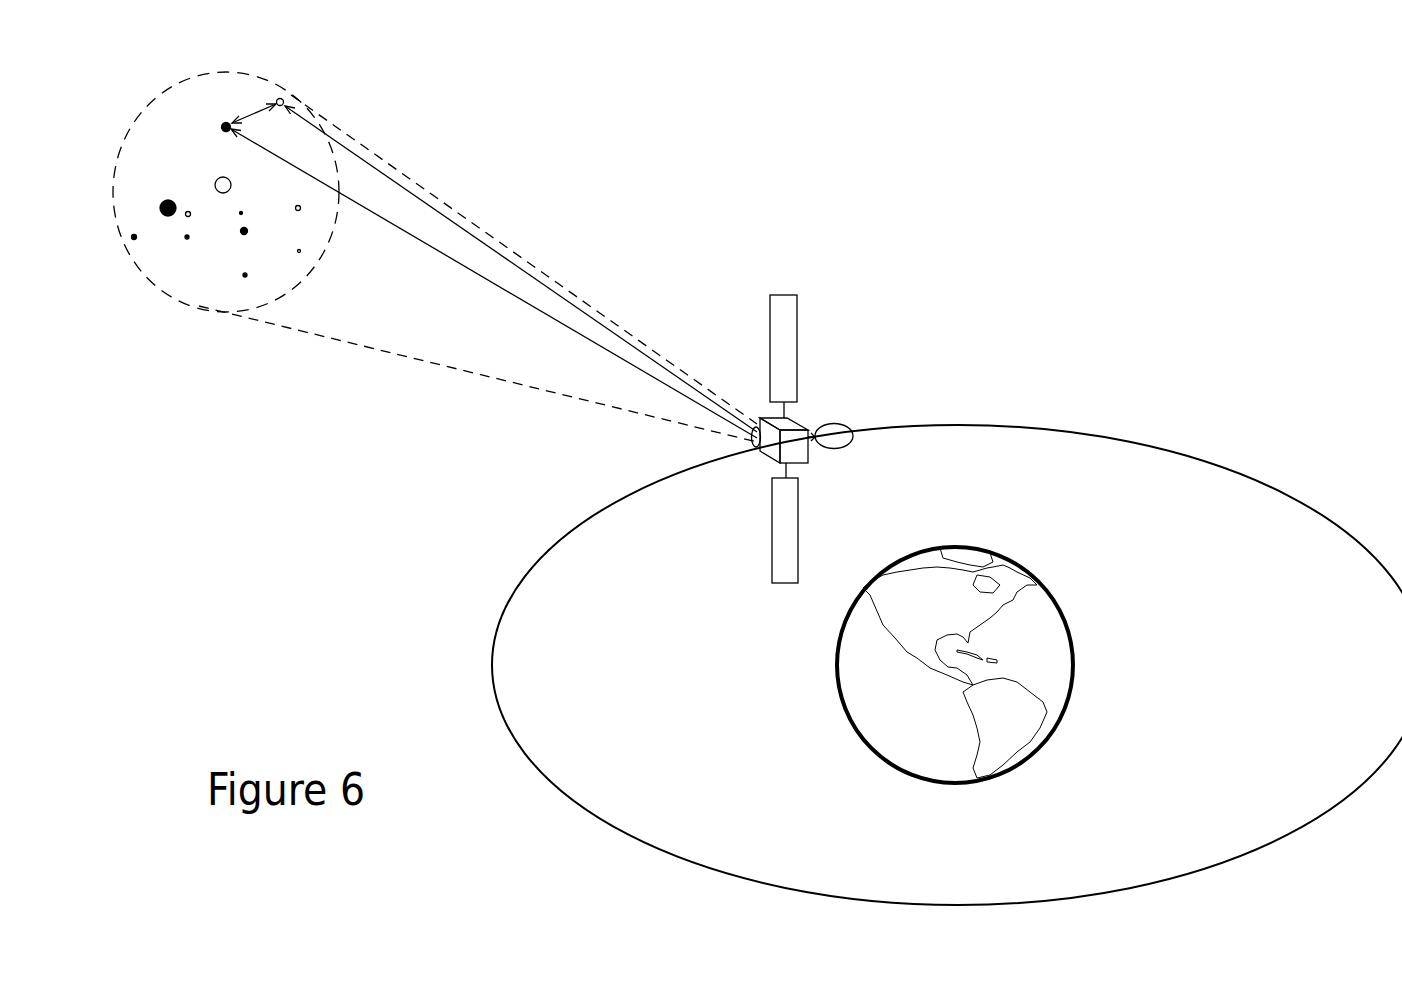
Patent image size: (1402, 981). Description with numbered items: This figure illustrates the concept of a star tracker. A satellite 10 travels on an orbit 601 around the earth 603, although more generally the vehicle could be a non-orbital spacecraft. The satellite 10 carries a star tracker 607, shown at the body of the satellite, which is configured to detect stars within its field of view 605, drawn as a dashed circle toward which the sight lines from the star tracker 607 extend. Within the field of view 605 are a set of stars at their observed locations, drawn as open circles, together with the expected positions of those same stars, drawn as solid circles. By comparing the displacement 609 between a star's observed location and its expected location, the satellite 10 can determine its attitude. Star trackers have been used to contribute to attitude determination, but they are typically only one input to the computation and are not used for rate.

The satellite 10 is at (801, 427).
The orbit 601 is at (1156, 446).
The earth 603 is at (1075, 612).
The field of view 605 is at (302, 89).
The star tracker 607 is at (757, 448).
The displacement 609 is at (249, 112).